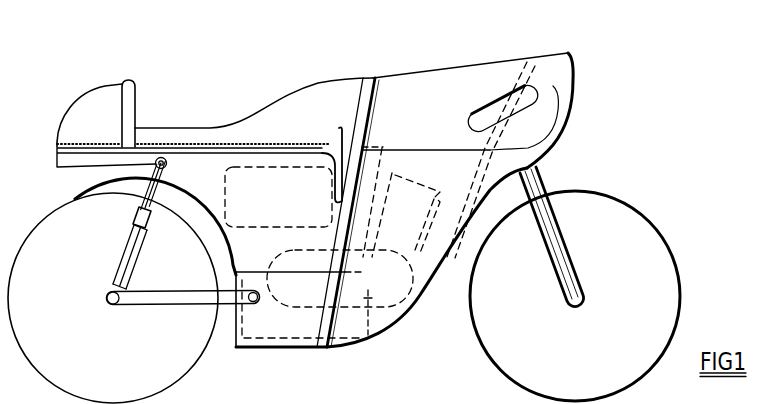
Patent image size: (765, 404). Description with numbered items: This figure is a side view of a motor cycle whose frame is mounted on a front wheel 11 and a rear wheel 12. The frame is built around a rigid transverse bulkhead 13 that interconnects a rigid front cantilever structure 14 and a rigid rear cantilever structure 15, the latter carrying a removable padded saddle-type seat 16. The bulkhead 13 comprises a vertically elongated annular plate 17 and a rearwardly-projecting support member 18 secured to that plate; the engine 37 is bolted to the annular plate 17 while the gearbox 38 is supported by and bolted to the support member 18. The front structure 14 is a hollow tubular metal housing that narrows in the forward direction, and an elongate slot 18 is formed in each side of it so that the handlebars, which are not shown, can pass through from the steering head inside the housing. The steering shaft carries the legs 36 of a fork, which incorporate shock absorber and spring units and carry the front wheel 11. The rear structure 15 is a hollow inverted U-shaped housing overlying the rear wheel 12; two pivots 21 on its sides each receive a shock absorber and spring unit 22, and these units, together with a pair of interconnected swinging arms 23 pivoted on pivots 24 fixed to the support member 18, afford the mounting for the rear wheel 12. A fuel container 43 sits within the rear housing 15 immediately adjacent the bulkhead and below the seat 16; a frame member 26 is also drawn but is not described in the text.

The front wheel 11 is at (488, 327).
The rear wheel 12 is at (90, 357).
The transverse bulkhead 13 is at (298, 311).
The front cantilever structure 14 is at (415, 255).
The rear cantilever structure 15 is at (198, 179).
The padded saddle-type seat 16 is at (201, 135).
The annular plate 17 is at (377, 101).
The rearwardly-projecting support member 18 is at (502, 110).
The pivot 21 is at (155, 163).
The shock absorber and spring unit 22 is at (137, 221).
The swinging arm 23 is at (182, 292).
The pivot 24 is at (251, 288).
The frame tube 26 is at (373, 78).
The fork legs 36 is at (562, 223).
The engine 37 is at (540, 166).
The gearbox 38 is at (372, 342).
The fuel container 43 is at (253, 167).